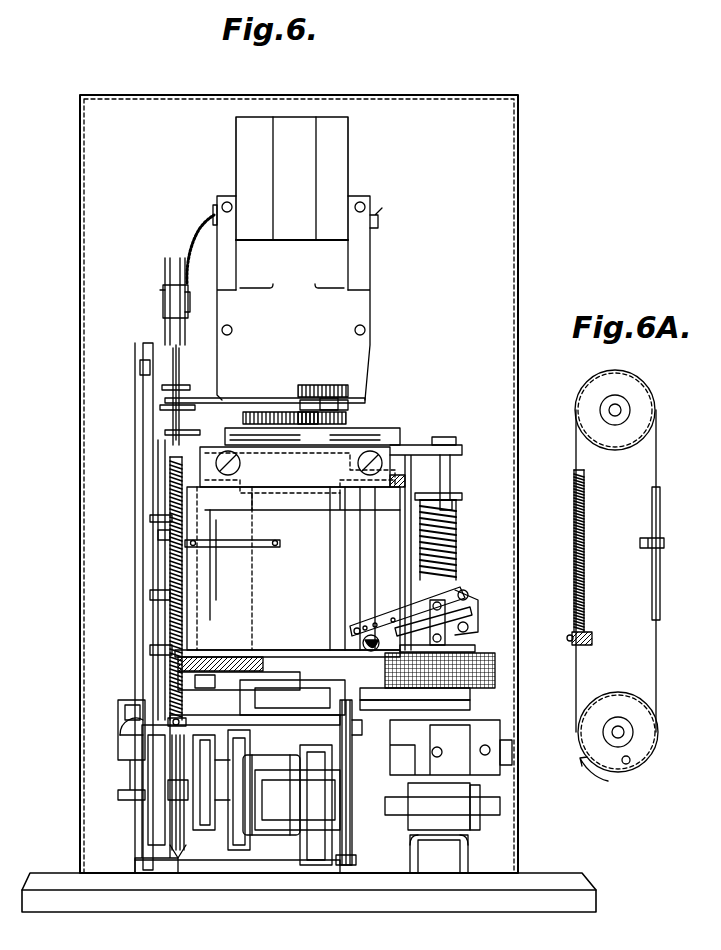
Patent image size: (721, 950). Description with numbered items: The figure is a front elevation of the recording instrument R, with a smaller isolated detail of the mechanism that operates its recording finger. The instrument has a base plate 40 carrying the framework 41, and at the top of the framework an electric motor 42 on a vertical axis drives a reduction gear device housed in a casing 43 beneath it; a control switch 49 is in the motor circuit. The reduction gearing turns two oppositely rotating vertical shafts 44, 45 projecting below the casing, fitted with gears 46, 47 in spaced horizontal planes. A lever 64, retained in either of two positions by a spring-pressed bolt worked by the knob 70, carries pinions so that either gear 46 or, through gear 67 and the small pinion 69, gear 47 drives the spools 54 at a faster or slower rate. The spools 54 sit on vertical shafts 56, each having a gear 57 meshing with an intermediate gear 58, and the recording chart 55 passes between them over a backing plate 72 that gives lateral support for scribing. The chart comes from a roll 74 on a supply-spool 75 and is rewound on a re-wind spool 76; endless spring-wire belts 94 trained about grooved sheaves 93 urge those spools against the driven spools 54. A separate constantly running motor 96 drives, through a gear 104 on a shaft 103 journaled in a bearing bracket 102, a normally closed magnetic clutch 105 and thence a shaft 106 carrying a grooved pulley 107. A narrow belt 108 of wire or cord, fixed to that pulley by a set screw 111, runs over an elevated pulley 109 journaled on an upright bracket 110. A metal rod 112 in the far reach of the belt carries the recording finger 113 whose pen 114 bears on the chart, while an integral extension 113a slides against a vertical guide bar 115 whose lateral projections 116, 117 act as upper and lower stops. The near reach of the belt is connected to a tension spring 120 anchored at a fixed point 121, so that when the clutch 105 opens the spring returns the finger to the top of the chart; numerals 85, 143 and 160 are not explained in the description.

In FIG. 6, the recording instrument R is at (531, 186).
In FIG. 6, the base plate 40 is at (536, 880).
In FIG. 6, the framework 41 is at (412, 468).
In FIG. 6A, the framework 41 is at (590, 633).
In FIG. 6, the electric motor 42 is at (337, 173).
In FIG. 6, the casing 43 is at (325, 285).
In FIG. 6, the vertical shaft 44 is at (242, 398).
In FIG. 6, the vertical shaft 45 is at (348, 405).
In FIG. 6, the gear 46 is at (242, 414).
In FIG. 6, the gear 47 is at (310, 385).
In FIG. 6, the control switch 49 is at (380, 228).
In FIG. 6, the spool 54 is at (458, 524).
In FIG. 6, the recording chart 55 is at (268, 645).
In FIG. 6, the vertical shaft 56 is at (302, 505).
In FIG. 6, the gear 57 is at (295, 467).
In FIG. 6, the gear 58 is at (278, 489).
In FIG. 6, the lever 64 is at (200, 405).
In FIG. 6, the gear 67 is at (345, 418).
In FIG. 6, the pinion 69 is at (342, 398).
In FIG. 6, the knob 70 is at (180, 385).
In FIG. 6, the backing plate 72 is at (338, 690).
In FIG. 6, the roll 74 is at (405, 567).
In FIG. 6, the supply-spool 75 is at (445, 520).
In FIG. 6, the re-wind spool 76 is at (162, 536).
In FIG. 6, the plate 85 is at (236, 680).
In FIG. 6, the grooved sheave 93 is at (420, 455).
In FIG. 6, the endless belt 94 is at (380, 690).
In FIG. 6, the motor 96 is at (272, 850).
In FIG. 6, the bearing bracket 102 is at (322, 866).
In FIG. 6, the shaft 103 is at (346, 800).
In FIG. 6, the gear 104 is at (347, 857).
In FIG. 6, the magnetic clutch 105 is at (287, 850).
In FIG. 6, the shaft 106 is at (232, 848).
In FIG. 6A, the shaft 106 is at (612, 732).
In FIG. 6, the grooved pulley 107 is at (178, 860).
In FIG. 6A, the grooved pulley 107 is at (624, 706).
In FIG. 6, the belt 108 is at (180, 348).
In FIG. 6A, the belt 108 is at (577, 684).
In FIG. 6, the pulley 109 is at (166, 278).
In FIG. 6A, the pulley 109 is at (622, 446).
In FIG. 6, the upright bracket 110 is at (175, 410).
In FIG. 6, the set screw 111 is at (206, 858).
In FIG. 6A, the set screw 111 is at (624, 765).
In FIG. 6, the metal rod 112 is at (142, 382).
In FIG. 6A, the metal rod 112 is at (660, 510).
In FIG. 6, the recording finger 113 is at (213, 548).
In FIG. 6, the extension 113a is at (166, 547).
In FIG. 6, the pen 114 is at (272, 548).
In FIG. 6, the guide bar 115 is at (165, 598).
In FIG. 6, the lateral projection 116 is at (160, 518).
In FIG. 6, the lateral projection 117 is at (166, 650).
In FIG. 6, the tension spring 120 is at (174, 694).
In FIG. 6A, the tension spring 120 is at (573, 595).
In FIG. 6, the fixed point 121 is at (172, 722).
In FIG. 6A, the fixed point 121 is at (568, 637).
In FIG. 6A, the clamp 143 is at (654, 550).
In FIG. 6, the arrow 160 is at (473, 615).